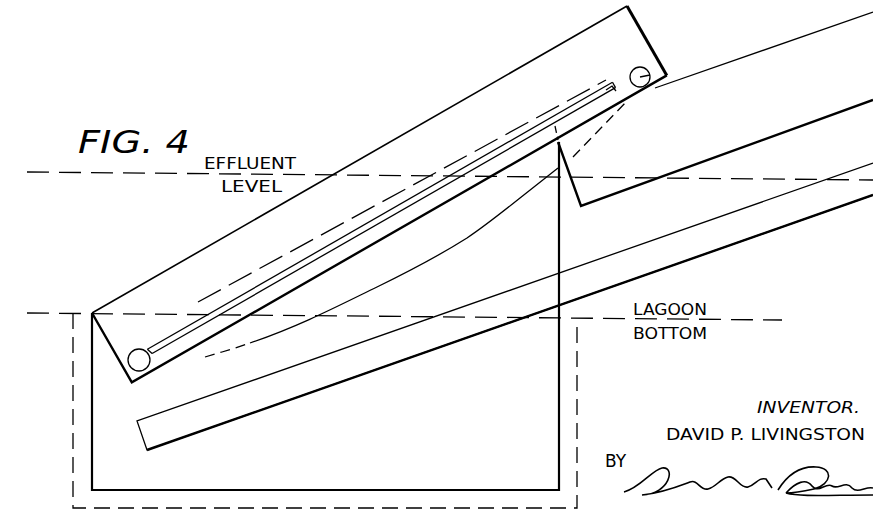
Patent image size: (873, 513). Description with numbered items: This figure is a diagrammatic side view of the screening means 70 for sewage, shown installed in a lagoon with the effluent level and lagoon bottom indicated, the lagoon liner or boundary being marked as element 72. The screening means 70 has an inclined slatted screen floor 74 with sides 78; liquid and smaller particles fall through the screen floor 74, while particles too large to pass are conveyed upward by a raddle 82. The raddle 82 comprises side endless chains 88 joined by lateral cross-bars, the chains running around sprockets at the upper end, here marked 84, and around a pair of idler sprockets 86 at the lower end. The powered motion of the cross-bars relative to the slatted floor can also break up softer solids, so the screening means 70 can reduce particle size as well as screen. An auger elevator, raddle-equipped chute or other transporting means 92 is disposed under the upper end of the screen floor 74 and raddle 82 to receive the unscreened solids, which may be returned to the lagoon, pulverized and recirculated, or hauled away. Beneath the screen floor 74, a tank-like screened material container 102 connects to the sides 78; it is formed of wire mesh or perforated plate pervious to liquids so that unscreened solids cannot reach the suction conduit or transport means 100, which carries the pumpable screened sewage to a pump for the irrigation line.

The screening means 70 is at (354, 156).
The lagoon liner 72 is at (73, 422).
The screen floor 74 is at (612, 88).
The sides 78 is at (240, 269).
The raddle 82 is at (526, 117).
The upper roller 84 is at (660, 72).
The idler sprockets 86 is at (145, 358).
The side endless chains 88 is at (438, 170).
The transporting means 92 is at (777, 92).
The suction conduit 100 is at (260, 393).
The screened material container 102 is at (93, 466).